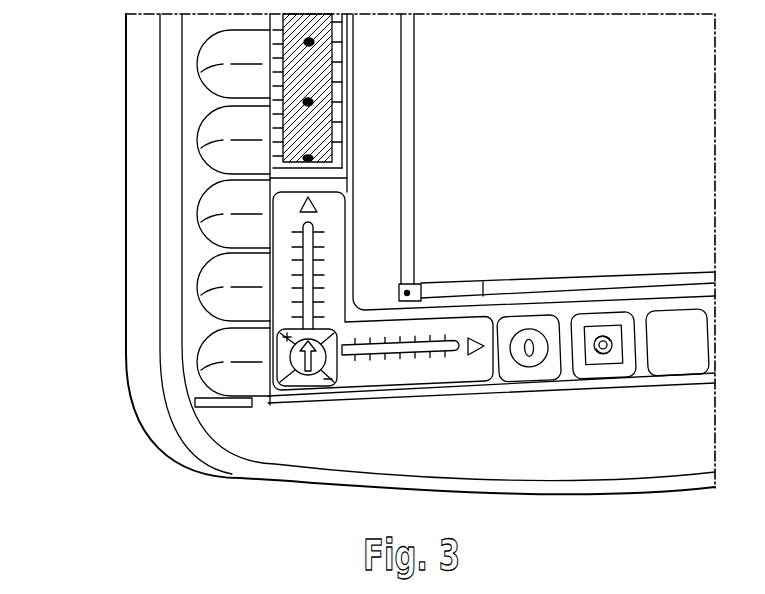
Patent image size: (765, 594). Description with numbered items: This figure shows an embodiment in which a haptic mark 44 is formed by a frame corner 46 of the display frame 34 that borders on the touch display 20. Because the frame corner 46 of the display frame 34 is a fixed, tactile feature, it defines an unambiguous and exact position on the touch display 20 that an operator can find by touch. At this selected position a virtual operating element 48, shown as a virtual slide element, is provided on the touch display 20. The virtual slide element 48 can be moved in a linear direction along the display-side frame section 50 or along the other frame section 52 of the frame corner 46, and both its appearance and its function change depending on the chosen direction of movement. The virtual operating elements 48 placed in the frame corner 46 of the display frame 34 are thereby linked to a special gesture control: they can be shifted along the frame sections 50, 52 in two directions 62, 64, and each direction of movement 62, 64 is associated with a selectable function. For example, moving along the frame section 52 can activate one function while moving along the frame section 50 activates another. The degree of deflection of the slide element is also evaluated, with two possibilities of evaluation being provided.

The touch display 20 is at (587, 186).
The display frame 34 is at (137, 242).
The haptic mark 44 is at (360, 404).
The frame corner 46 is at (272, 405).
The virtual operating element 48 is at (360, 333).
The display-side frame section 50 is at (350, 180).
The frame section 52 is at (433, 398).
The direction of movement 62 is at (478, 357).
The direction of movement 64 is at (318, 206).